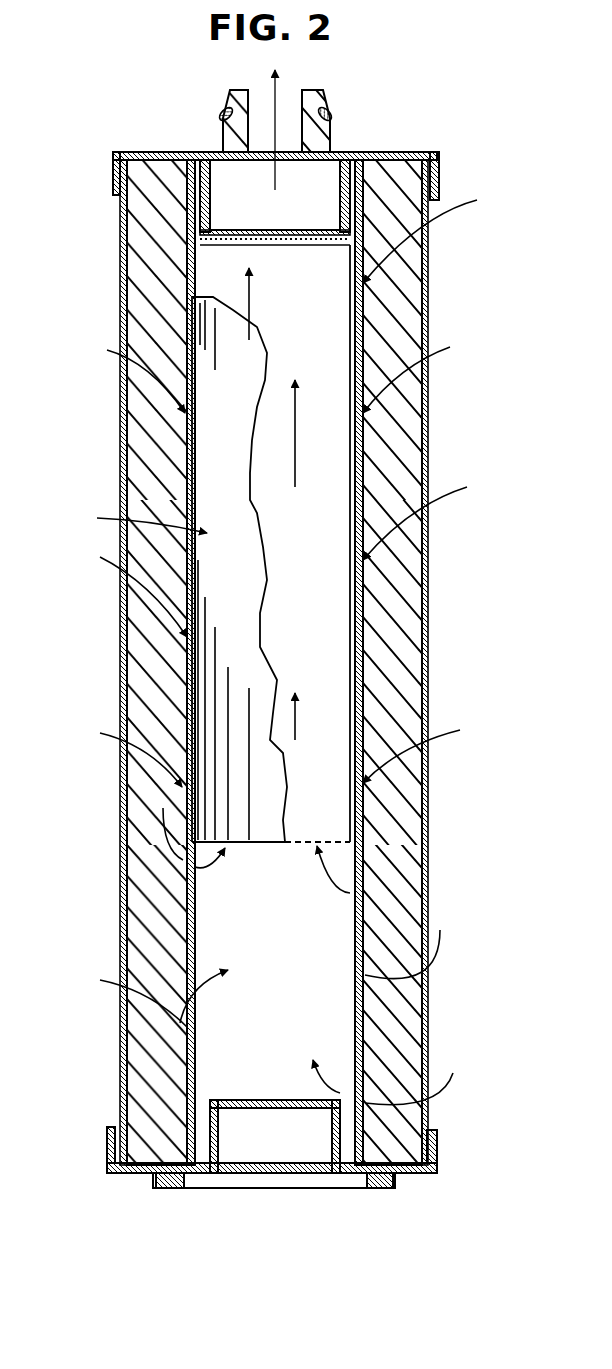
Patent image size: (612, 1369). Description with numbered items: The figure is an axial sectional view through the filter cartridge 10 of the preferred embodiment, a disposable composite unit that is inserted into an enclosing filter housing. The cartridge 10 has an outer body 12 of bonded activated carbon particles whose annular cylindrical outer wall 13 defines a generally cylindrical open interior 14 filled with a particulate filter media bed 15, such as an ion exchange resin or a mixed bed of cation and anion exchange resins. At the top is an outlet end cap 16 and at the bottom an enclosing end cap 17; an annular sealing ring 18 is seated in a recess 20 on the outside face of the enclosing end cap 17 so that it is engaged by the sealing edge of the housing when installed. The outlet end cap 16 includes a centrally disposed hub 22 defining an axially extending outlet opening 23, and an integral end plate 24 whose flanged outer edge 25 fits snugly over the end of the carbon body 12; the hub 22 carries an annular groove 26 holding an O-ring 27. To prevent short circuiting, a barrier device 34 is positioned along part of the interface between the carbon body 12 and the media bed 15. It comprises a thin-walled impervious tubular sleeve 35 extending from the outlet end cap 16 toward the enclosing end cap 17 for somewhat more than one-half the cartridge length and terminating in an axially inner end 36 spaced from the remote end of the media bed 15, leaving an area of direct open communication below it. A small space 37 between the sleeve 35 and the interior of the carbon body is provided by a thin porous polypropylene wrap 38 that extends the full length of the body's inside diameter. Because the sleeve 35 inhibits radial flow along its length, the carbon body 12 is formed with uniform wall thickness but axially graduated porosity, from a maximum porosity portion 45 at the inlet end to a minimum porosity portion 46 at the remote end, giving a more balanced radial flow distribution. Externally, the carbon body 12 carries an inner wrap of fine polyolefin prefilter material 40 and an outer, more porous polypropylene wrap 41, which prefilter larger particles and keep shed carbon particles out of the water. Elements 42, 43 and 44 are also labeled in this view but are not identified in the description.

The filter cartridge 10 is at (111, 620).
The outer body 12 is at (146, 500).
The annular cylindrical outer wall 13 is at (142, 663).
The open interior 14 is at (195, 455).
The particulate filter media bed 15 is at (333, 330).
The outlet end cap 16 is at (190, 152).
The enclosing end cap 17 is at (130, 1173).
The annular sealing ring 18 is at (168, 1190).
The recess 20 is at (375, 1188).
The hub 22 is at (328, 142).
The outlet opening 23 is at (297, 100).
The end plate 24 is at (154, 151).
The flanged outer edge 25 is at (112, 178).
The annular groove 26 is at (327, 111).
The O-ring 27 is at (229, 110).
The barrier device 34 is at (135, 522).
The tubular sleeve 35 is at (213, 740).
The axially inner end 36 is at (262, 845).
The space 37 is at (190, 320).
The polypropylene wrap 38 is at (440, 620).
The polyolefin prefilter material 40 is at (150, 1078).
The polypropylene wrap 41 is at (118, 1033).
The chamber 42 is at (340, 210).
The screen 43 is at (246, 233).
The chamber wall 44 is at (211, 185).
The maximum porosity portion 45 is at (135, 235).
The minimum porosity portion 46 is at (113, 1078).